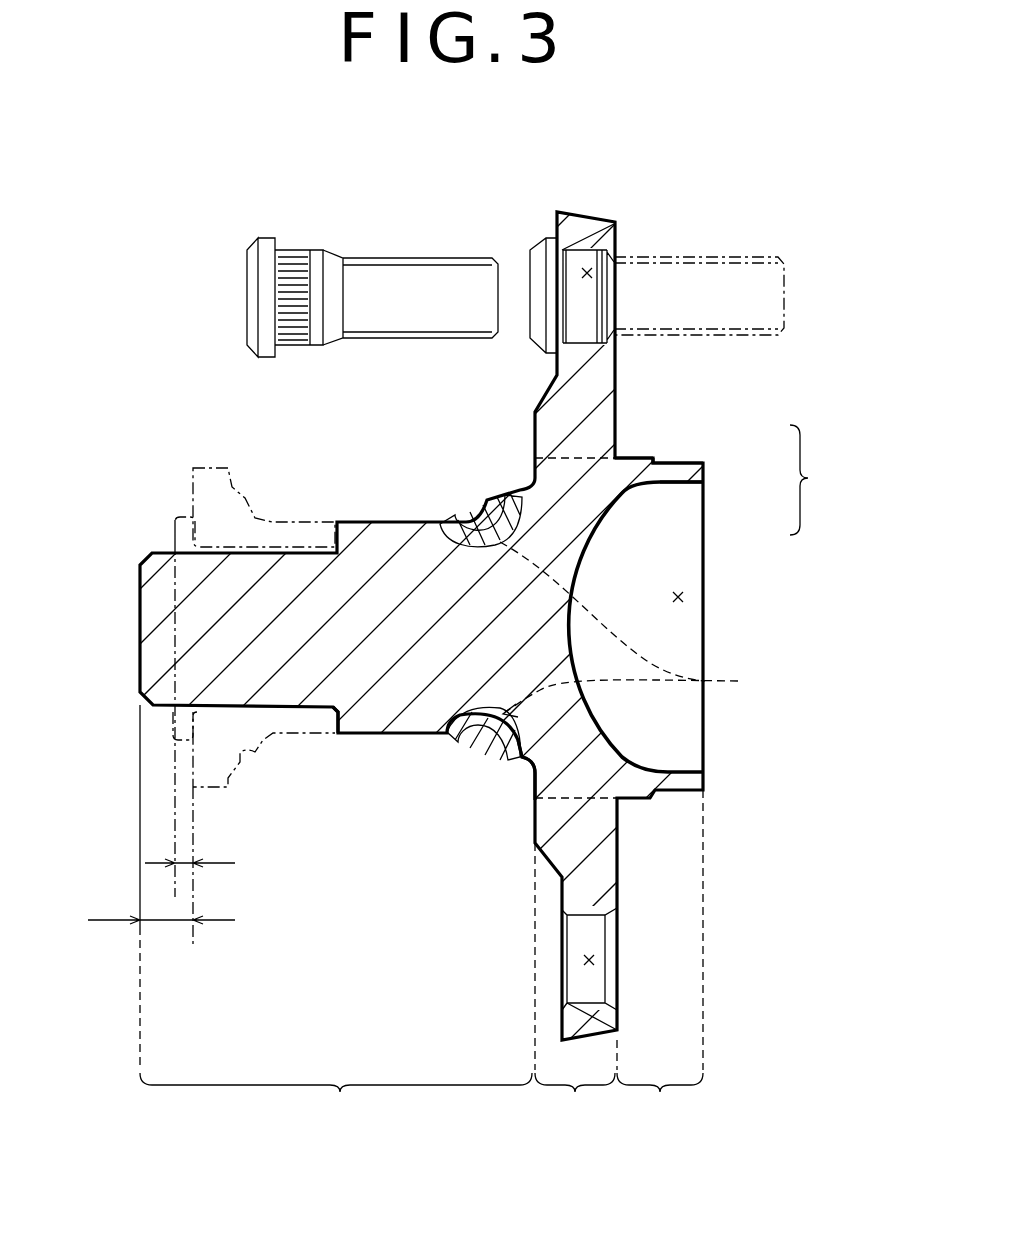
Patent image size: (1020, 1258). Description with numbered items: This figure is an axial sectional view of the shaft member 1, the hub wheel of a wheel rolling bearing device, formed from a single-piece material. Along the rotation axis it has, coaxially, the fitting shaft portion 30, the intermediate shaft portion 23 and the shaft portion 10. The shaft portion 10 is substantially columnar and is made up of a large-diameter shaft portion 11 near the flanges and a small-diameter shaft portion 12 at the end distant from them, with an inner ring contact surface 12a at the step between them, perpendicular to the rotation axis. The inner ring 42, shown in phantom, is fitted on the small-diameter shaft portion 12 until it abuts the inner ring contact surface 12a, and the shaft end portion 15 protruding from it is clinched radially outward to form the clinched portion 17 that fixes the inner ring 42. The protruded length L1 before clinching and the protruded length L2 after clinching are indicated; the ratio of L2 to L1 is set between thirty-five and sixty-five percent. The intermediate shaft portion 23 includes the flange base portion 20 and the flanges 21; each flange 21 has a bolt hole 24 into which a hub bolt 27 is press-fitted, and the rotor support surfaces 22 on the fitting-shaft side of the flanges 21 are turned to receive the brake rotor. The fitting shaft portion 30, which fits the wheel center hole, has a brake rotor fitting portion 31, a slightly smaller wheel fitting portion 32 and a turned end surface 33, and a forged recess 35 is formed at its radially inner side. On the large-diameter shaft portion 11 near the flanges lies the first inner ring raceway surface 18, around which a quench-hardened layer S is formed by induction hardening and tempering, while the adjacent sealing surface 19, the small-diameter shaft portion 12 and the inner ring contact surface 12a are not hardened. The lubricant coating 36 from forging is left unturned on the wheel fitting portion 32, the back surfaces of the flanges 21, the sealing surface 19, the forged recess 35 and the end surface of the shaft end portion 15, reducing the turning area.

The shaft member 1 is at (352, 500).
The shaft portion 10 is at (393, 830).
The large-diameter shaft portion 11 is at (372, 720).
The small-diameter shaft portion 12 is at (284, 700).
The inner ring contact surface 12a is at (335, 718).
The shaft end portion 15 is at (157, 695).
The clinched portion 17 is at (180, 532).
The first inner ring raceway surface 18 is at (483, 745).
The sealing surface 19 is at (531, 777).
The flange base portion 20 is at (590, 437).
The flange 21 is at (605, 375).
The rotor support surface 22 is at (618, 408).
The intermediate shaft portion 23 is at (657, 682).
The bolt hole 24 is at (596, 273).
The hub bolt 27 is at (242, 300).
The fitting shaft portion 30 is at (724, 776).
The brake rotor fitting portion 31 is at (652, 445).
The wheel fitting portion 32 is at (690, 461).
The end surface 33 is at (703, 486).
The forged recess 35 is at (686, 597).
The lubricant coating 36 is at (138, 660).
The inner ring 42 is at (208, 466).
The quench-hardened layer S is at (630, 629).
The protruded length before clinching L1 is at (165, 907).
The protruded length after clinching L2 is at (196, 850).